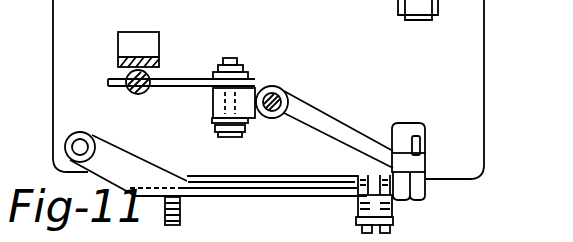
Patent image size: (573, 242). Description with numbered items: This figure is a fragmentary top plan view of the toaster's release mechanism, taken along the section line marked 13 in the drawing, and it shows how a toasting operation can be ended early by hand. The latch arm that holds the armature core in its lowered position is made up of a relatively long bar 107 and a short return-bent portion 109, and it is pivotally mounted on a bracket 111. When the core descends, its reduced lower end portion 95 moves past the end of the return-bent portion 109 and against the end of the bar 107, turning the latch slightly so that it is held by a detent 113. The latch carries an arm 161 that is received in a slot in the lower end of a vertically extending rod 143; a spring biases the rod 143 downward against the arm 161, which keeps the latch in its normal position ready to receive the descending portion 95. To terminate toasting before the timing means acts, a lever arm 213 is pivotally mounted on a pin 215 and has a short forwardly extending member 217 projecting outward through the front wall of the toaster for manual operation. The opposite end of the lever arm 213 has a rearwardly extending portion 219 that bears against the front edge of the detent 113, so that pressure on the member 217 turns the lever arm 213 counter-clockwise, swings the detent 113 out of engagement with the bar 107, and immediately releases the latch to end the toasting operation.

The section line 13- 13 is at (53, 163).
The lower end portion 95 is at (292, 91).
The bar 107 is at (425, 158).
The return-bent portion 109 is at (257, 86).
The bracket 111 is at (245, 137).
The detent 113 is at (425, 131).
The rod 143 is at (143, 92).
The arm 161 is at (186, 78).
The lever arm 213 is at (157, 150).
The pin 215 is at (98, 131).
The forwardly extending member 217 is at (178, 212).
The rearwardly extending portion 219 is at (423, 187).